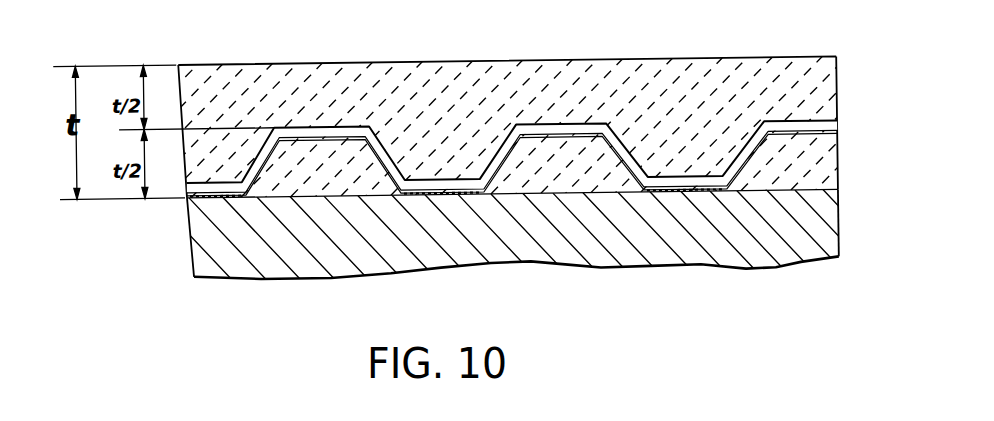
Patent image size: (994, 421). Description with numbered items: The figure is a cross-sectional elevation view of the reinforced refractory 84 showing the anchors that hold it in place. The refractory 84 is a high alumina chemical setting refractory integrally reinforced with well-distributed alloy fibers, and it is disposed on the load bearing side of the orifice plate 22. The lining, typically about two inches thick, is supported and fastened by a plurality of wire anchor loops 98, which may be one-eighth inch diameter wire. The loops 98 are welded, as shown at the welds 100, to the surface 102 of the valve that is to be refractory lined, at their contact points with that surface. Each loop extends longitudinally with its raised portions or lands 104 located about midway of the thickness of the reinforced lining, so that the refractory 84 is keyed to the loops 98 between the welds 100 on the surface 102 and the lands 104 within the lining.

The reinforced refractory 84 is at (560, 64).
The wire anchor loops 98 is at (607, 129).
The raised portions or lands 104 is at (299, 140).
The welds 100 is at (191, 200).
The surface of the valve 102 is at (814, 187).
The orifice plate 22 is at (845, 159).